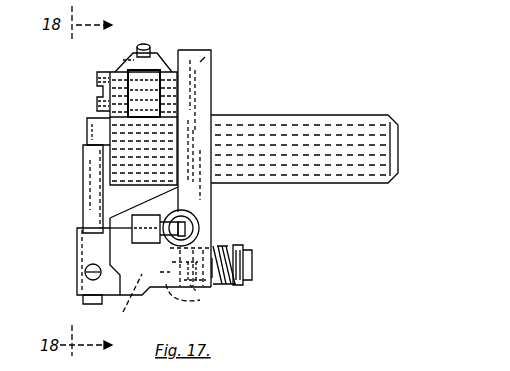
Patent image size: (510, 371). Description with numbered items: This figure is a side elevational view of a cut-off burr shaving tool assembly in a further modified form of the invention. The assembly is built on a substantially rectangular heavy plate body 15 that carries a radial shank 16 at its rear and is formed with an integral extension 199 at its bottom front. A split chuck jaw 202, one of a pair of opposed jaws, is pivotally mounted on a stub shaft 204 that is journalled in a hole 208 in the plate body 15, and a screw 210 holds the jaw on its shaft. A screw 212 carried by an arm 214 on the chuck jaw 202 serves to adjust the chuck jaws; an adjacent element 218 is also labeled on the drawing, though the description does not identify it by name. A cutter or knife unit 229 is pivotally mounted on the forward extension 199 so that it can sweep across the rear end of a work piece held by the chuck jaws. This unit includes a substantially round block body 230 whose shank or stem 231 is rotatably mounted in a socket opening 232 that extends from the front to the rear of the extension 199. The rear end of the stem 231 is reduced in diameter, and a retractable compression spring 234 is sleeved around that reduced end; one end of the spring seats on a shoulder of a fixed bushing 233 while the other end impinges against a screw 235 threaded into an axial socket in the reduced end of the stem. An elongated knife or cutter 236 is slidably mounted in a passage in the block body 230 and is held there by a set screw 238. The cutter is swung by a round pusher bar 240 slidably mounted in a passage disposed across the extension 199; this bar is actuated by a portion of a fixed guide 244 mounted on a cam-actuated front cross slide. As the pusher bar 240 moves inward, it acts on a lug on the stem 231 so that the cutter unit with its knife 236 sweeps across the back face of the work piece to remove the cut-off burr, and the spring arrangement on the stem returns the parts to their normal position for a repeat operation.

The plate body 15 is at (208, 57).
The radial shank 16 is at (345, 106).
The extension 199 is at (118, 235).
The split chuck jaw 202 is at (125, 136).
The stub shaft 204 is at (197, 100).
The hole 208 is at (195, 80).
The screw 210 is at (98, 78).
The screw 212 is at (143, 44).
The arm 214 is at (160, 52).
The bracket 218 is at (92, 125).
The cutter or knife unit 229 is at (73, 283).
The block body 230 is at (90, 253).
The shank or stem 231 is at (126, 301).
The socket opening 232 is at (188, 304).
The fixed bushing 233 is at (196, 286).
The compression spring 234 is at (226, 284).
The screw 235 is at (253, 253).
The knife or cutter 236 is at (82, 190).
The set screw 238 is at (85, 272).
The pusher bar 240 is at (140, 222).
The fixed guide 244 is at (192, 220).